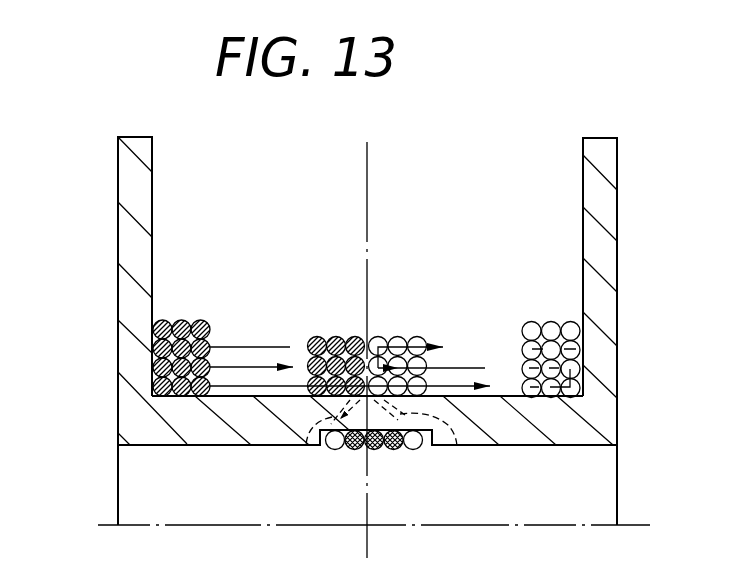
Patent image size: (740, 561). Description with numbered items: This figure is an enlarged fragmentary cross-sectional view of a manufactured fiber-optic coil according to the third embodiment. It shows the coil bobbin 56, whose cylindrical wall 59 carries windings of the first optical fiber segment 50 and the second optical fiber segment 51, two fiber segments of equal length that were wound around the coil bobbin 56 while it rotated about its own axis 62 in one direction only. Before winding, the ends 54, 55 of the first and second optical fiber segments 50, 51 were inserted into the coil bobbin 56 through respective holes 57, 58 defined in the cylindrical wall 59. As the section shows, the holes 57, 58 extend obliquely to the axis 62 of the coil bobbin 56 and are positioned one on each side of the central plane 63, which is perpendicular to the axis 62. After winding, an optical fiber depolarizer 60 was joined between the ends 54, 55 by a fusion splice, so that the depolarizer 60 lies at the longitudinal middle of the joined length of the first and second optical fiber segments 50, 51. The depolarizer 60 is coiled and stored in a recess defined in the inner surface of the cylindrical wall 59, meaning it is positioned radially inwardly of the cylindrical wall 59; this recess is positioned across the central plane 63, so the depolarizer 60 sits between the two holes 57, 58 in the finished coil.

The first optical fiber segment 50 is at (190, 300).
The second optical fiber segment 51 is at (535, 321).
The end of first optical fiber segment 54 is at (415, 451).
The end of second optical fiber segment 55 is at (327, 449).
The coil bobbin 56 is at (137, 403).
The hole 57 is at (307, 445).
The hole 58 is at (456, 447).
The cylindrical wall 59 is at (540, 447).
The optical fiber depolarizer 60 is at (403, 455).
The axis 62 is at (110, 527).
The central plane 63 is at (368, 233).